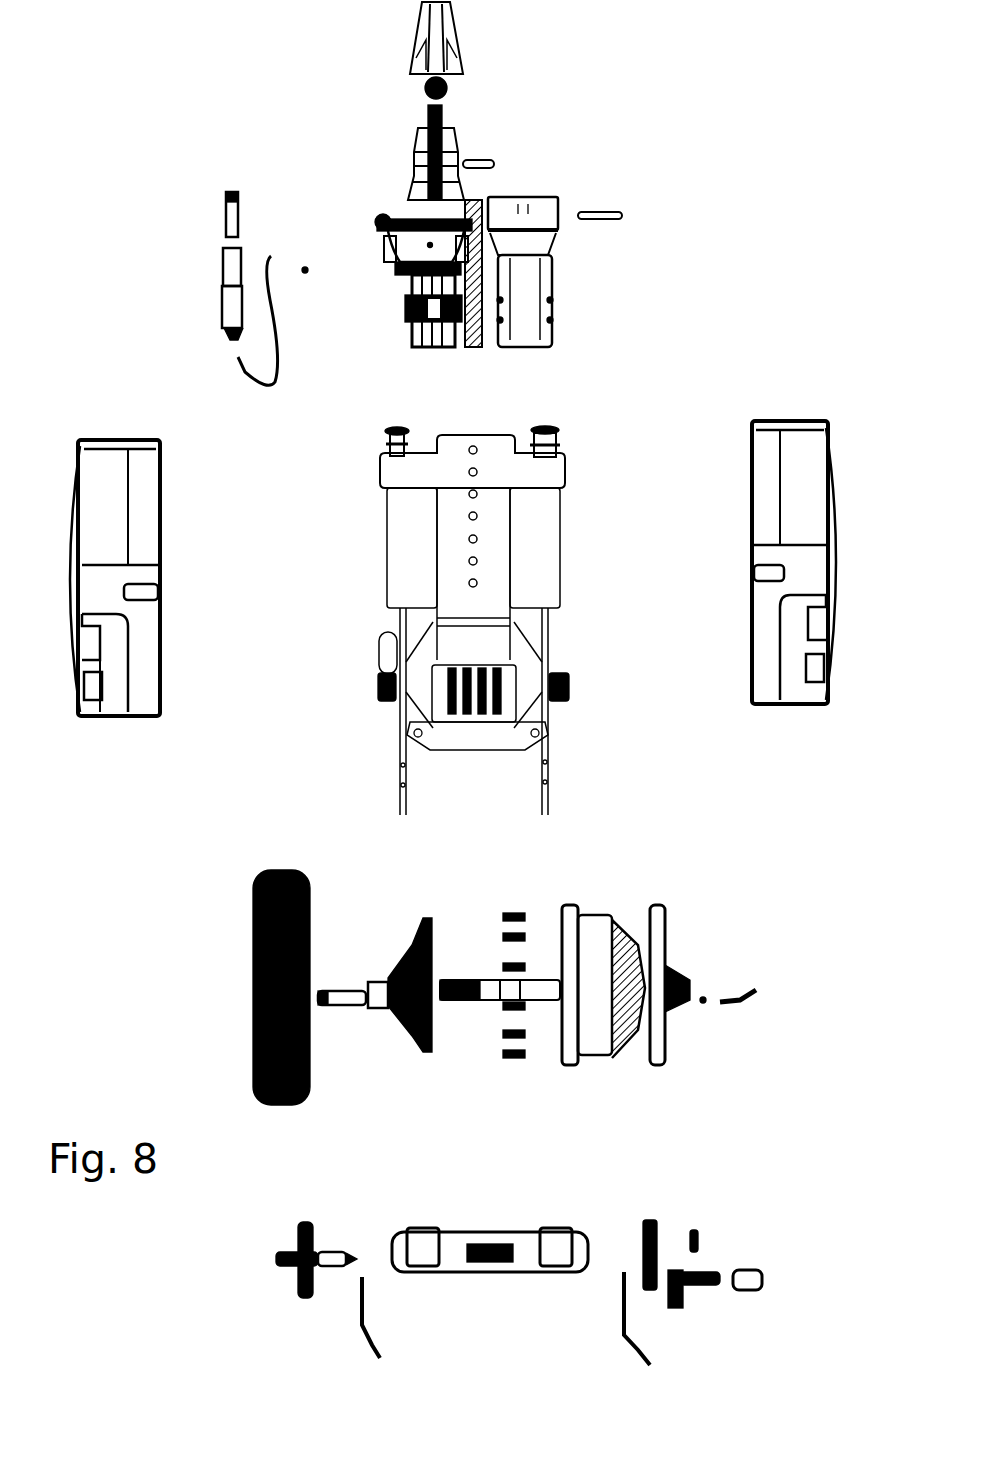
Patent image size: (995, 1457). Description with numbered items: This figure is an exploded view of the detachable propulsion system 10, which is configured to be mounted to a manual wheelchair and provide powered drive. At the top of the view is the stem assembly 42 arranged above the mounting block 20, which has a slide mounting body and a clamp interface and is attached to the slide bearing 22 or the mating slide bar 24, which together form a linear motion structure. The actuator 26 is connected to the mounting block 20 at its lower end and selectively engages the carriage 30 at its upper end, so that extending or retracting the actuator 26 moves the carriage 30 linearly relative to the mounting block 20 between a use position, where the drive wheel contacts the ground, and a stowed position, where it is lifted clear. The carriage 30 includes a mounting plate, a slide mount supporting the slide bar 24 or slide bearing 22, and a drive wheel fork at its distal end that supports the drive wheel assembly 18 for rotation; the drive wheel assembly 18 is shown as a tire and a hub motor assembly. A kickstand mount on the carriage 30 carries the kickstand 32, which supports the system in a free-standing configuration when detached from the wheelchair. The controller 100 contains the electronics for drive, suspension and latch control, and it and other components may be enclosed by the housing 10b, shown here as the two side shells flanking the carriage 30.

The detachable propulsion system 10 is at (722, 110).
The housing 10b is at (113, 438).
The steering stem assembly 42 is at (540, 125).
The actuator 26 is at (225, 300).
The slide bar 24 is at (438, 342).
The slide bearing 22 is at (405, 302).
The mounting block 20 is at (556, 318).
The carriage 30 is at (545, 470).
The controller 100 is at (528, 549).
The drive wheel assembly 18 is at (690, 876).
The kickstand 32 is at (660, 1172).